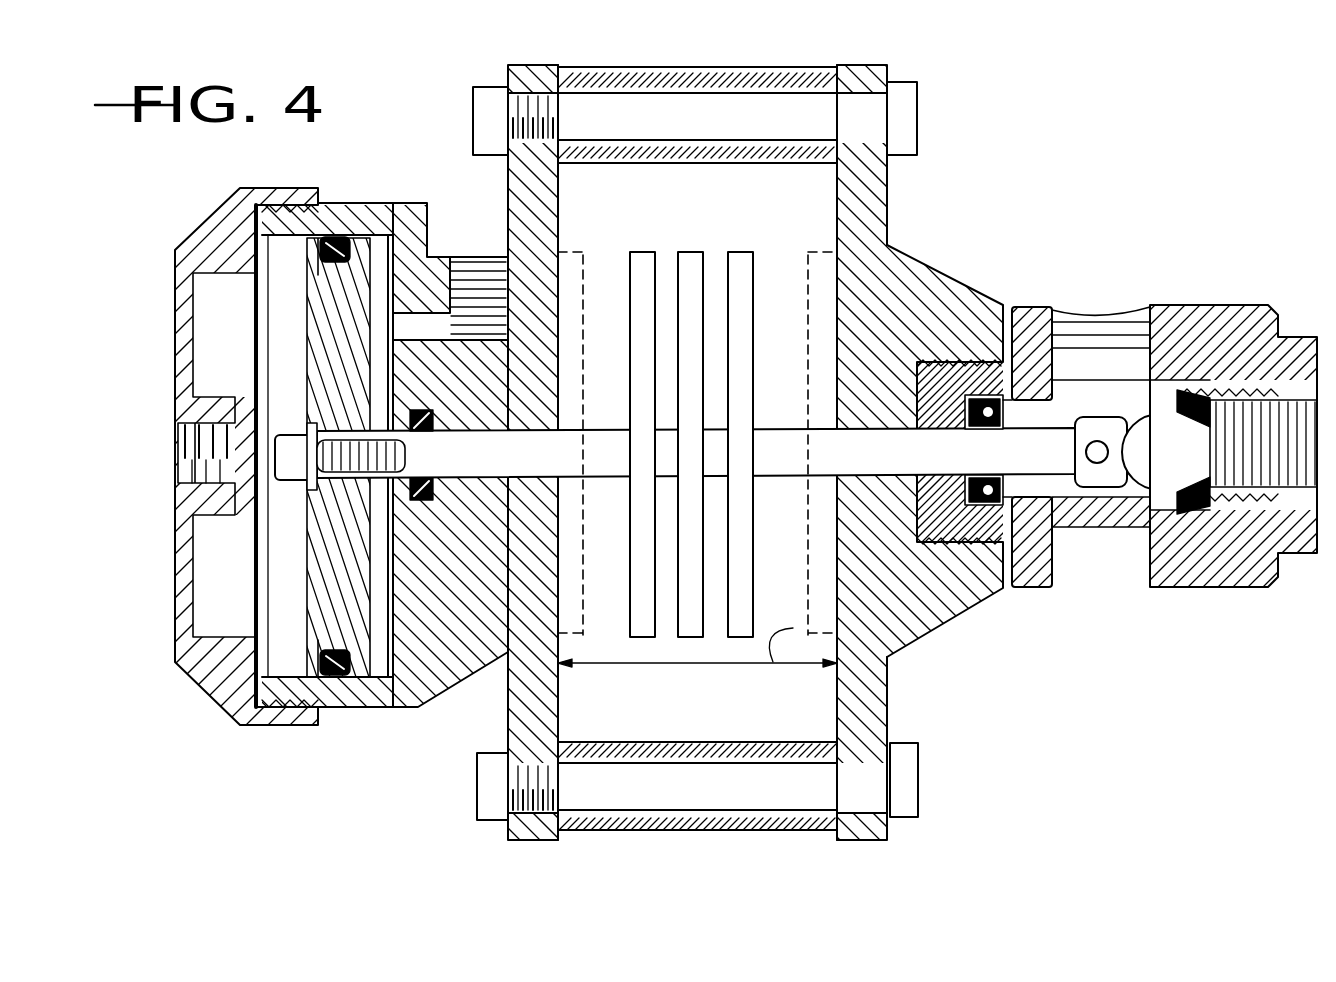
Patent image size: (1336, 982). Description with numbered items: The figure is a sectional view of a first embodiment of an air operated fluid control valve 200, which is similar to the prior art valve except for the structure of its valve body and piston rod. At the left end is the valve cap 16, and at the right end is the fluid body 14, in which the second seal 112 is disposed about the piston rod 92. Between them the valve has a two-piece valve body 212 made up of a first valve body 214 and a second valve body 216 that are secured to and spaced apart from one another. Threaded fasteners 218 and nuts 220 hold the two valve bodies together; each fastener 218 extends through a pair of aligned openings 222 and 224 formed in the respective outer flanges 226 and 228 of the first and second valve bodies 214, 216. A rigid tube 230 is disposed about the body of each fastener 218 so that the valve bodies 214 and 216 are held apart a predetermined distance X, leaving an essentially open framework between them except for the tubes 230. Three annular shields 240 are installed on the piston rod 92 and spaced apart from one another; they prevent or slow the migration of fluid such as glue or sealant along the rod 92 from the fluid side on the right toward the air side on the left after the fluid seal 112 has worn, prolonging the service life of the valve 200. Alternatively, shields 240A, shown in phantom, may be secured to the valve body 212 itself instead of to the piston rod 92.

The fluid control valve 200 is at (668, 441).
The two-piece valve body 212 is at (956, 620).
The first valve body 214 is at (535, 580).
The second valve body 216 is at (850, 578).
The threaded fastener 218 is at (928, 81).
The nut 220 is at (503, 822).
The opening 222 is at (550, 143).
The opening 224 is at (867, 143).
The outer flange 226 is at (537, 73).
The outer flange 228 is at (868, 65).
The rigid tube 230 is at (707, 77).
The shield 240 is at (741, 252).
The shield 240A is at (818, 228).
The piston rod 92 is at (778, 447).
The second seal 112 is at (990, 305).
The fluid body 14 is at (1203, 595).
The valve cap 16 is at (170, 625).